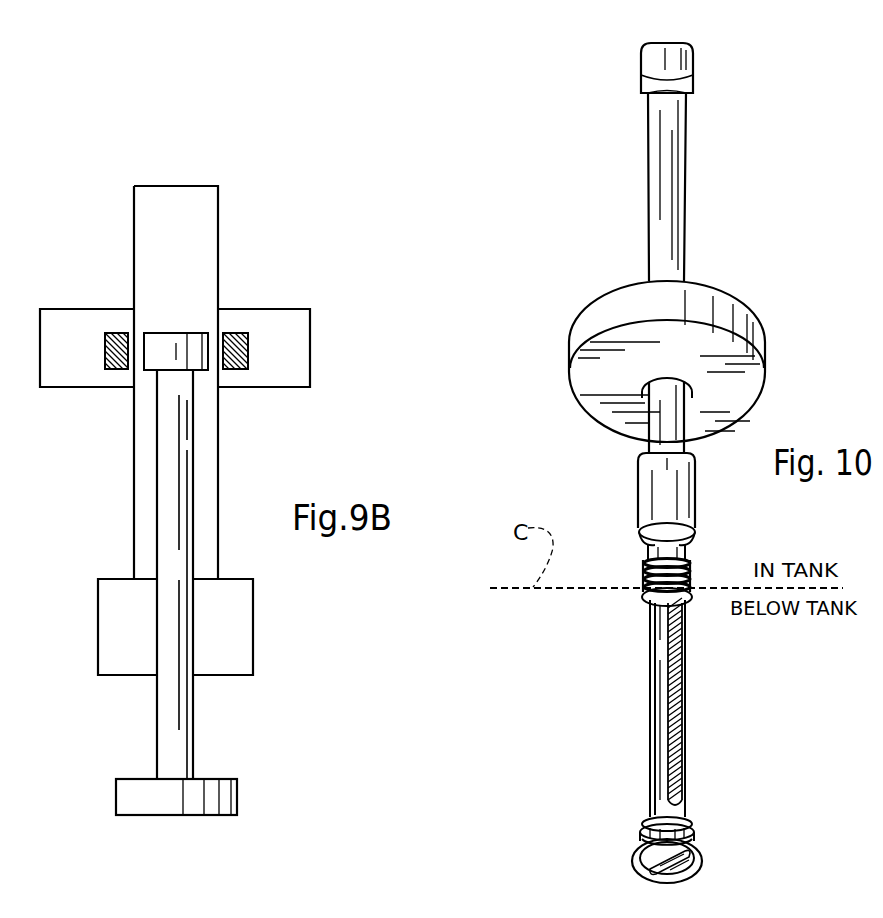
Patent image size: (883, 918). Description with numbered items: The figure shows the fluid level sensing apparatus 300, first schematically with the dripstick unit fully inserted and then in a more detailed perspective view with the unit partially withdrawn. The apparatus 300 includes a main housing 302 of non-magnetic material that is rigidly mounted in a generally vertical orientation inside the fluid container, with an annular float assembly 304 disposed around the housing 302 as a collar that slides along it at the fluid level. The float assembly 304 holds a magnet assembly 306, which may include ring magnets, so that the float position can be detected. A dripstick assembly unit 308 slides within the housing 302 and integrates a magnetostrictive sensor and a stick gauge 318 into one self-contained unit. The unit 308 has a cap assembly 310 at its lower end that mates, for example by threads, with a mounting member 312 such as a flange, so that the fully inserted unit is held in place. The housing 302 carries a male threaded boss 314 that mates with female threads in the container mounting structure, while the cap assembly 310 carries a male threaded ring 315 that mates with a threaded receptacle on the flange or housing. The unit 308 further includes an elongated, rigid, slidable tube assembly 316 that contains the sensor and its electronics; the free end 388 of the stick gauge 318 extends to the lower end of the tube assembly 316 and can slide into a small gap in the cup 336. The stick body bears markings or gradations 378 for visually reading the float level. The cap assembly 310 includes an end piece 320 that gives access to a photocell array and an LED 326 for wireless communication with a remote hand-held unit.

In FIG. 9B, the apparatus 300 is at (340, 230).
In FIG. 10, the apparatus 300 is at (580, 146).
In FIG. 9B, the main housing 302 is at (220, 257).
In FIG. 10, the main housing 302 is at (684, 153).
In FIG. 9B, the annular float assembly 304 is at (313, 343).
In FIG. 10, the annular float assembly 304 is at (760, 319).
In FIG. 9B, the magnet assembly 306 is at (104, 350).
In FIG. 9B, the dripstick assembly unit 308 is at (198, 466).
In FIG. 10, the dripstick assembly unit 308 is at (716, 792).
In FIG. 9B, the cap assembly 310 is at (157, 805).
In FIG. 10, the cap assembly 310 is at (701, 842).
In FIG. 9B, the mounting member 312 is at (258, 618).
In FIG. 10, the male threaded boss 314 is at (691, 583).
In FIG. 10, the male threaded ring 315 is at (643, 829).
In FIG. 10, the tube assembly 316 is at (651, 700).
In FIG. 10, the stick gauge 318 is at (682, 693).
In FIG. 10, the end piece 320 is at (696, 868).
In FIG. 10, the LED 326 is at (647, 876).
In FIG. 10, the cup 336 is at (652, 790).
In FIG. 10, the markings or gradations 378 is at (684, 740).
In FIG. 10, the free end 388 is at (682, 793).